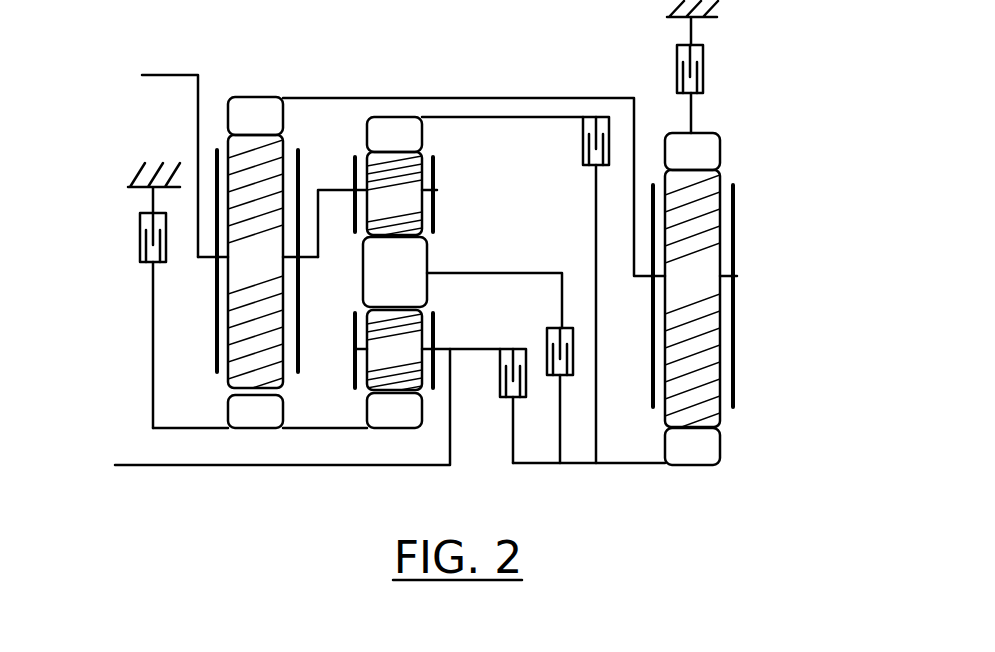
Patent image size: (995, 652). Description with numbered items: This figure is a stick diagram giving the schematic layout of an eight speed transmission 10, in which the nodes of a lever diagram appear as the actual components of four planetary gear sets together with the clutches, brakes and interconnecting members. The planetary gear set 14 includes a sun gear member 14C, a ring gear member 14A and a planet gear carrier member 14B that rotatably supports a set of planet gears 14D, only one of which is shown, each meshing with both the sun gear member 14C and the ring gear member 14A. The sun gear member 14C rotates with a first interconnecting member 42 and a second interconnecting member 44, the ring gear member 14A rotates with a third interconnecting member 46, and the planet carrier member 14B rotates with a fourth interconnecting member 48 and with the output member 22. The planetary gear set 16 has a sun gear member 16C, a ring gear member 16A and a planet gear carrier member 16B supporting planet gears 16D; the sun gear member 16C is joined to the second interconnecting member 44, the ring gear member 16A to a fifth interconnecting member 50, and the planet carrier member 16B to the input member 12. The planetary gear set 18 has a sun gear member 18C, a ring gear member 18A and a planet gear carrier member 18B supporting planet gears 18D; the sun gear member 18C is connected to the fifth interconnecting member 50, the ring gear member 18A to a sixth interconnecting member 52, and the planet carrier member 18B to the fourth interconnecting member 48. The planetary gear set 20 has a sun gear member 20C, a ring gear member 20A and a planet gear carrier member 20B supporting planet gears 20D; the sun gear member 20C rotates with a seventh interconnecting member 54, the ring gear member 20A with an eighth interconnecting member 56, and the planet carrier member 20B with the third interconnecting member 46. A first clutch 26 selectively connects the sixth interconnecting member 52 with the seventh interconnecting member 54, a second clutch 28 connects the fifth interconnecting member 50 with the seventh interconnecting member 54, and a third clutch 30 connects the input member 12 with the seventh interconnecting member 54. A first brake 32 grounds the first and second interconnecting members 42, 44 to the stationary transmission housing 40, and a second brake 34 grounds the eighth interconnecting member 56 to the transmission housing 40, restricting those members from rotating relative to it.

The eight speed transmission 10 is at (512, 80).
The input member 12 is at (160, 465).
The planetary gear set 14 is at (271, 227).
The ring gear member 14A is at (234, 130).
The planet gear carrier member 14B is at (300, 160).
The sun gear member 14C is at (234, 425).
The planet gears 14D is at (234, 268).
The planetary gear set 16 is at (402, 391).
The ring gear member 16A is at (373, 302).
The planet gear carrier member 16B is at (355, 372).
The sun gear member 16C is at (373, 425).
The planet gears 16D is at (373, 365).
The planetary gear set 18 is at (409, 169).
The ring gear member 18A is at (373, 147).
The planet gear carrier member 18B is at (435, 193).
The sun gear member 18C is at (370, 267).
The planet gears 18D is at (373, 209).
The planetary gear set 20 is at (734, 285).
The ring gear member 20A is at (671, 166).
The planet gear carrier member 20B is at (735, 330).
The sun gear member 20C is at (671, 461).
The planet gears 20D is at (671, 295).
The output member 22 is at (143, 76).
The first clutch 26 is at (583, 150).
The second clutch 28 is at (547, 345).
The third clutch 30 is at (508, 397).
The first brake 32 is at (141, 236).
The second brake 34 is at (677, 72).
The transmission housing 40 is at (132, 184).
The first interconnecting member 42 is at (153, 330).
The second interconnecting member 44 is at (318, 428).
The third interconnecting member 46 is at (326, 98).
The fourth interconnecting member 48 is at (300, 262).
The fifth interconnecting member 50 is at (530, 273).
The sixth interconnecting member 52 is at (468, 118).
The seventh interconnecting member 54 is at (610, 463).
The eighth interconnecting member 56 is at (691, 115).